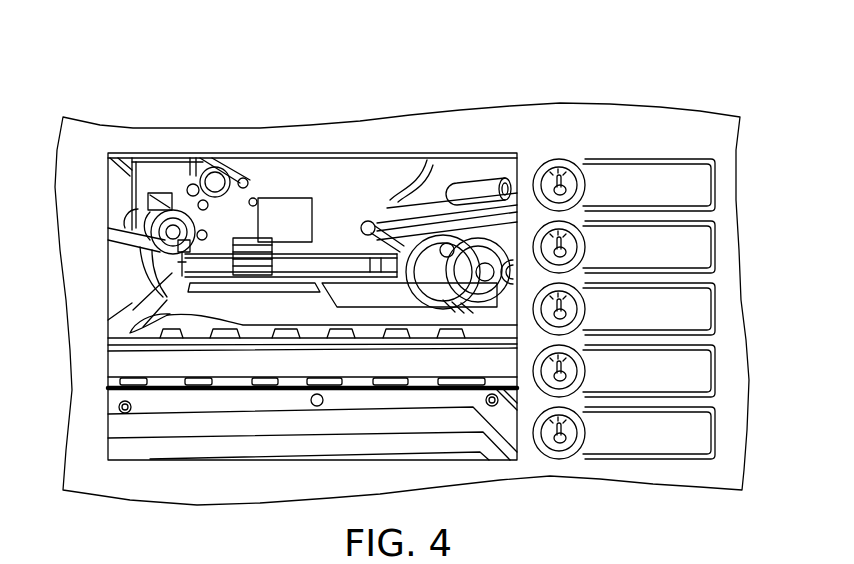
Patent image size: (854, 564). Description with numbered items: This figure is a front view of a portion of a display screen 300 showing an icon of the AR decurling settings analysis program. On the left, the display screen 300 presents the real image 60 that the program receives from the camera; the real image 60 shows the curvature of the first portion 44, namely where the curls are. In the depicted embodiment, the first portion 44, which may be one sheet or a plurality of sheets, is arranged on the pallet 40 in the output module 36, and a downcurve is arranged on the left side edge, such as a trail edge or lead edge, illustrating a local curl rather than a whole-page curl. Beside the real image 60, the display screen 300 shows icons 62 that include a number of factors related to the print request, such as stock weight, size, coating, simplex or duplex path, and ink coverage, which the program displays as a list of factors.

The display screen 300 is at (641, 85).
The icons 62 is at (726, 144).
The output module 36 is at (172, 162).
The real image 60 is at (302, 165).
The first portion 44 is at (143, 233).
The pallet 40 is at (127, 366).